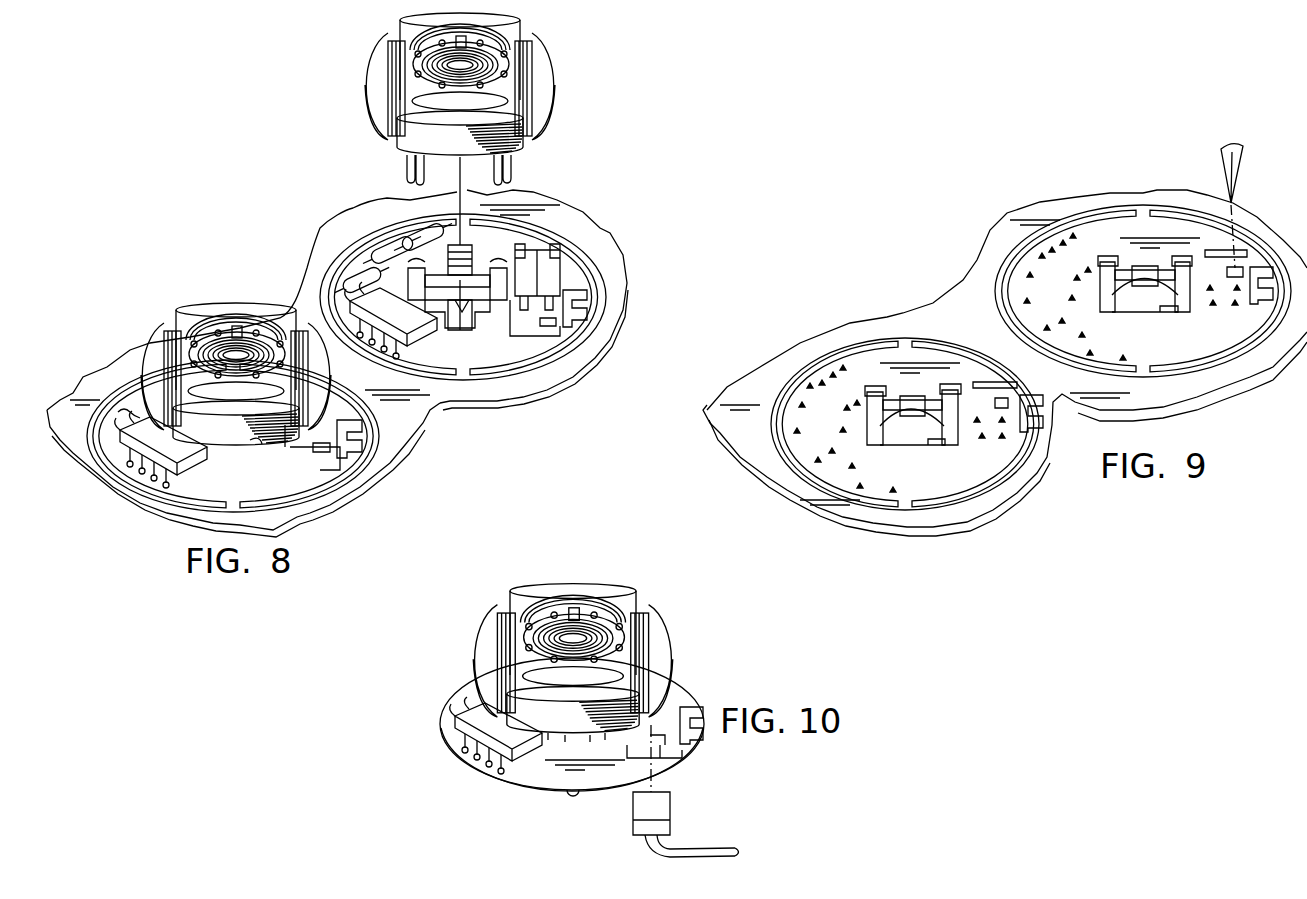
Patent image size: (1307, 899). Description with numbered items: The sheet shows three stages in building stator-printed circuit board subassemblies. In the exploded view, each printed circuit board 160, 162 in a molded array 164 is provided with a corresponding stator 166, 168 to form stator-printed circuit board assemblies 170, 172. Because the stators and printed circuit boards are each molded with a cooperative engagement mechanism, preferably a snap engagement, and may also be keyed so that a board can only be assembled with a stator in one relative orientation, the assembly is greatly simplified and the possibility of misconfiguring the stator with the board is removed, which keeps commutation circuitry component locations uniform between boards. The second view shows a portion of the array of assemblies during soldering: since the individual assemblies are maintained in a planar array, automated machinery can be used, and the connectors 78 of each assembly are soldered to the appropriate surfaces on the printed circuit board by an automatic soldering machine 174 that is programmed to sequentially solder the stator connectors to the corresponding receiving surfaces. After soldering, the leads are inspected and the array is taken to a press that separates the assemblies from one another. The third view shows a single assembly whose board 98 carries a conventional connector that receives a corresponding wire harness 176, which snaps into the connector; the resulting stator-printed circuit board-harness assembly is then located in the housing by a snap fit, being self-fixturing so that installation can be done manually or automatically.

In FIG. 8, the printed circuit board 160 is at (256, 494).
In FIG. 8, the printed circuit board 162 is at (481, 349).
In FIG. 8, the molded array 164 is at (427, 403).
In FIG. 8, the stator 166 is at (217, 307).
In FIG. 8, the stator 168 is at (551, 78).
In FIG. 8, the stator-printed circuit board assembly 170 is at (233, 277).
In FIG. 9, the stator-printed circuit board assembly 170 is at (893, 320).
In FIG. 8, the stator-printed circuit board assembly 172 is at (373, 174).
In FIG. 9, the stator-printed circuit board assembly 172 is at (1088, 198).
In FIG. 9, the automatic soldering machine 174 is at (1237, 173).
In FIG. 9, the connectors 78 is at (1235, 300).
In FIG. 10, the printed circuit board 98 is at (540, 786).
In FIG. 10, the wire harness 176 is at (669, 806).